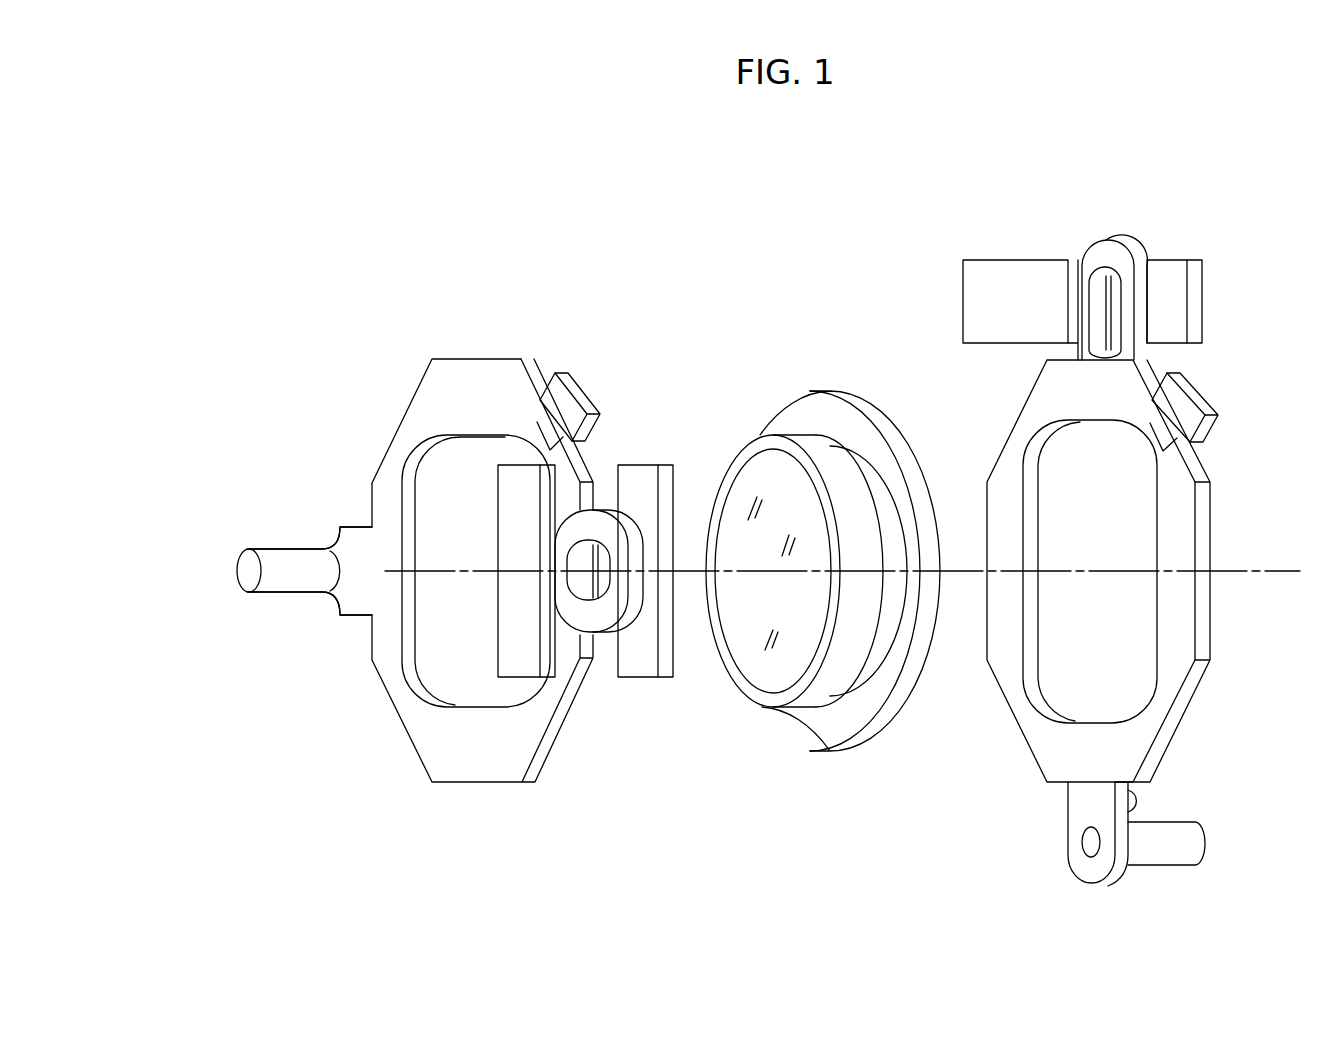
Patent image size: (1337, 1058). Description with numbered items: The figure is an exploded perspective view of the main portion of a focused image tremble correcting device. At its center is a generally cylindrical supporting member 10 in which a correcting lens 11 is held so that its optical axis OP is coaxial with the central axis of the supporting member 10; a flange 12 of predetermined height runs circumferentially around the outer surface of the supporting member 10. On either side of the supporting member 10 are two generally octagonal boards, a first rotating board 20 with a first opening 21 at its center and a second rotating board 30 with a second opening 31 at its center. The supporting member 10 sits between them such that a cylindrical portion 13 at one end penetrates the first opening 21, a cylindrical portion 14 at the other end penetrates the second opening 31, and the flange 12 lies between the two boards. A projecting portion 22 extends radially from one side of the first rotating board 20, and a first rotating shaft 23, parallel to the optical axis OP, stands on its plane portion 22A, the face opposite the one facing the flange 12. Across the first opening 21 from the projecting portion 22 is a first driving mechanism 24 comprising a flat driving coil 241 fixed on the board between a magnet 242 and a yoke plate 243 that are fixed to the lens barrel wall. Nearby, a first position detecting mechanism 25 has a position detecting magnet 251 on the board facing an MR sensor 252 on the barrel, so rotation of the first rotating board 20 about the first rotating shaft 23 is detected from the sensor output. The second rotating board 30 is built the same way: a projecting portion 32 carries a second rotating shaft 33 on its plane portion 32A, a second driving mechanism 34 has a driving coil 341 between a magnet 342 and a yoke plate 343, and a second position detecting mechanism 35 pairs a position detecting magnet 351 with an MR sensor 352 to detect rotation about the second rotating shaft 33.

The supporting member 10 is at (818, 763).
The correcting lens 11 is at (770, 657).
The flange 12 is at (876, 432).
The cylindrical portion 13 is at (822, 452).
The cylindrical portion 14 is at (918, 486).
The first rotating board 20 is at (478, 799).
The first opening 21 is at (440, 663).
The projecting portion 22 is at (338, 524).
The plane portion 22A is at (350, 604).
The first rotating shaft 23 is at (278, 548).
The first driving mechanism 24 is at (607, 762).
The driving coil 241 is at (593, 616).
The magnet 242 is at (522, 680).
The yoke plate 243 is at (640, 680).
The first position detecting mechanism 25 is at (612, 406).
The position detecting magnet 251 is at (540, 428).
The MR sensor 252 is at (573, 405).
The second rotating board 30 is at (985, 752).
The second opening 31 is at (1115, 625).
The projecting portion 32 is at (1126, 877).
The plane portion 32A is at (1140, 801).
The second rotating shaft 33 is at (1170, 822).
The second driving mechanism 34 is at (1078, 231).
The driving coil 341 is at (1103, 254).
The magnet 342 is at (1015, 285).
The yoke plate 343 is at (1165, 285).
The second position detecting mechanism 35 is at (1205, 362).
The position detecting magnet 351 is at (1168, 438).
The MR sensor 352 is at (1186, 393).
The optical axis OP is at (1292, 569).